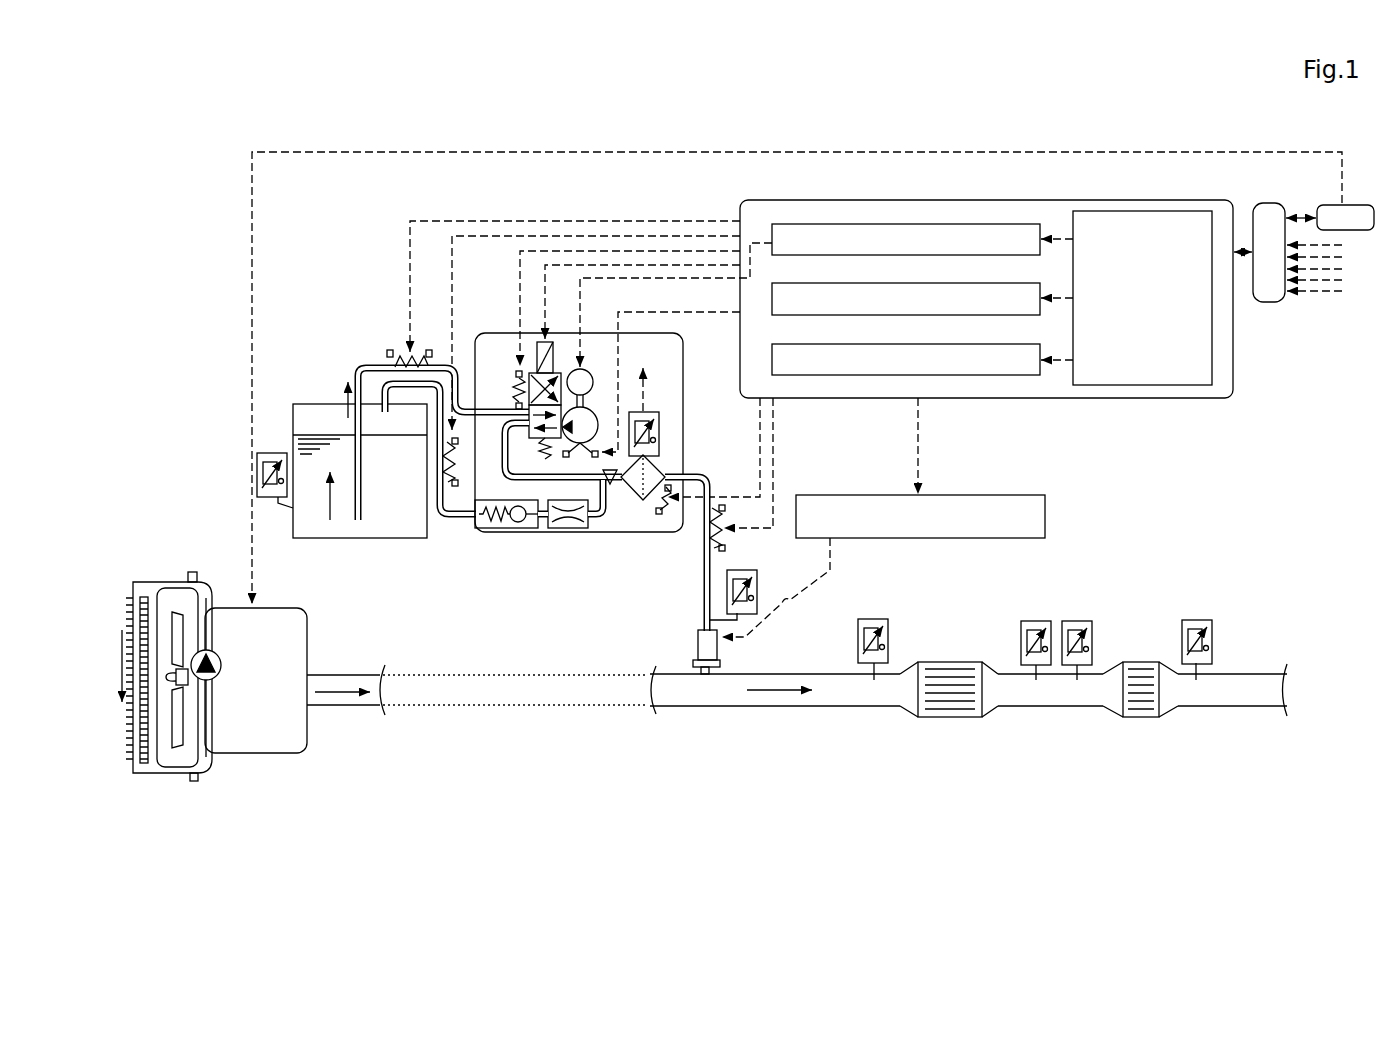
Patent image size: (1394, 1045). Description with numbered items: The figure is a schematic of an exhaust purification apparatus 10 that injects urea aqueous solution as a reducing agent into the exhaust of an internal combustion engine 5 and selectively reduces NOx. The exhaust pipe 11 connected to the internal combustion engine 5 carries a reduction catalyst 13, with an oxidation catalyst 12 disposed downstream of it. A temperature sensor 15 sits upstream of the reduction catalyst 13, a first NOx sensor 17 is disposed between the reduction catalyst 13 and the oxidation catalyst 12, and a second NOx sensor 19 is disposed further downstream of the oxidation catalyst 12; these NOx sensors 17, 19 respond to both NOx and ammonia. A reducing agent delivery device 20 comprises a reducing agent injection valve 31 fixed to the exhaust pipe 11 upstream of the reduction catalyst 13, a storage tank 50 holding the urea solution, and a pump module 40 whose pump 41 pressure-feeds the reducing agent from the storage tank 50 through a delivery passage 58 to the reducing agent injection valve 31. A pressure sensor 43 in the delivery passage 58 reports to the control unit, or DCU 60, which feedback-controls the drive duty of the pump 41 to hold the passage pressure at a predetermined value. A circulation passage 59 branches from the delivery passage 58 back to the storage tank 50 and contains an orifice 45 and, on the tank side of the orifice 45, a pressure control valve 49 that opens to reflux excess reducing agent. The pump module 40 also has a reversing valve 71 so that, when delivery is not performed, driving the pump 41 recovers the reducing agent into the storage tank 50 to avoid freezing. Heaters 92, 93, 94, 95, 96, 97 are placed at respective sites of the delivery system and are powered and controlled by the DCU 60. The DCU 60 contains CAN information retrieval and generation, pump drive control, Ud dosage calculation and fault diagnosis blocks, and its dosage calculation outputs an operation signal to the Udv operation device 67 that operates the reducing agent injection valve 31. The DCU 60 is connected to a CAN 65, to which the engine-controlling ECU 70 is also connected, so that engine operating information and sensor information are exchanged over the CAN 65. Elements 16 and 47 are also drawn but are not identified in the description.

The internal combustion engine 5 is at (308, 738).
The exhaust purification apparatus 10 is at (1228, 150).
The exhaust pipe 11 is at (780, 708).
The oxidation catalyst 12 is at (1141, 662).
The reduction catalyst 13 is at (953, 662).
The temperature sensor 15 is at (890, 626).
The downstream exhaust temperature sensor 16 is at (1036, 621).
The first NOx sensor 17 is at (1078, 621).
The second NOx sensor 19 is at (1195, 620).
The reducing agent delivery device 20 is at (386, 260).
The reducing agent injection valve 31 is at (697, 632).
The pump module 40 is at (599, 467).
The pump 41 is at (593, 410).
The pressure sensor 43 is at (661, 424).
The orifice 45 is at (576, 530).
The filter 47 is at (660, 470).
The pressure control valve 49 is at (497, 530).
The storage tank 50 is at (393, 461).
The delivery passage 58 is at (705, 553).
The circulation passage 59 is at (438, 520).
The control unit (DCU) 60 is at (986, 287).
The CAN 65 is at (1268, 303).
The reducing agent injection valve operation device 67 is at (1024, 492).
The control unit (ECU) 70 is at (1355, 231).
The reversing valve 71 is at (557, 341).
The heater 92 is at (387, 354).
The heater 93 is at (456, 488).
The heater 94 is at (516, 385).
The heater 95 is at (578, 456).
The heater 96 is at (656, 516).
The heater 97 is at (710, 531).